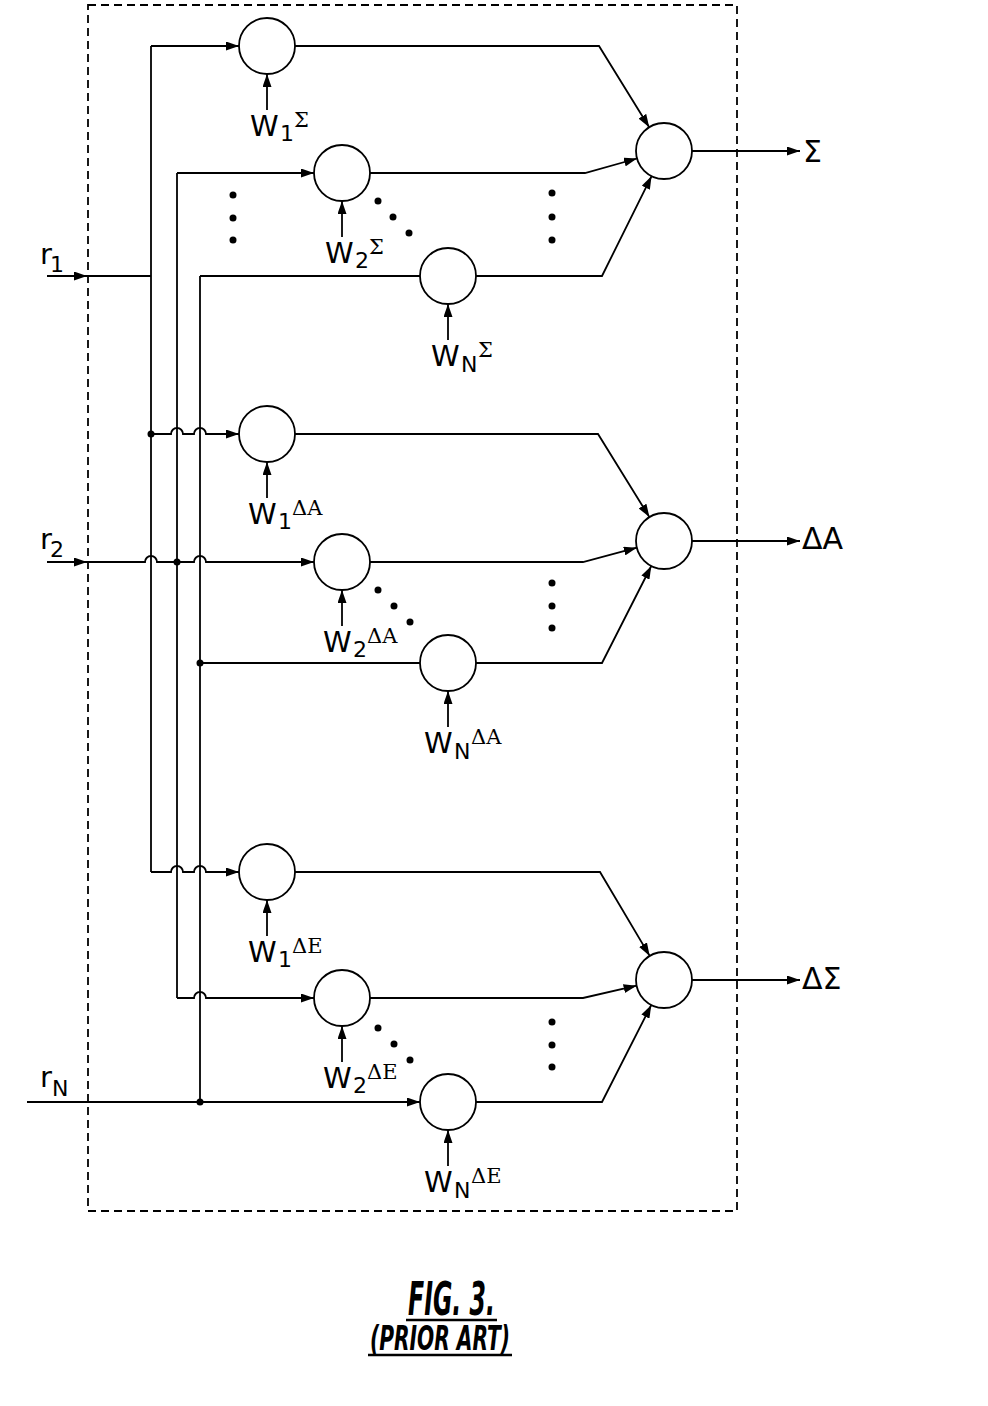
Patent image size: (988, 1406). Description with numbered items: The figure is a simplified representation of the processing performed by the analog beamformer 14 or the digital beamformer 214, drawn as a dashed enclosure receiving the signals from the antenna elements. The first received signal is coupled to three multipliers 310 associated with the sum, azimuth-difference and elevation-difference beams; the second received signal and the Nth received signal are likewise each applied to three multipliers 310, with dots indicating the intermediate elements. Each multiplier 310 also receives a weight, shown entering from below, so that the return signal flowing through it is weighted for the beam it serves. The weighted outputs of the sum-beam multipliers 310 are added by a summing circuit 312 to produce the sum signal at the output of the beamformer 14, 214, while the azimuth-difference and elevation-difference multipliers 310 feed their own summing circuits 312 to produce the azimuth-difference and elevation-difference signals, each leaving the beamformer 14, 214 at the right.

The multiplier 310 is at (284, 24).
The summing circuit 312 is at (667, 952).
The analog beamformer 14 is at (412, 637).
The digital beamformer 214 is at (197, 1212).